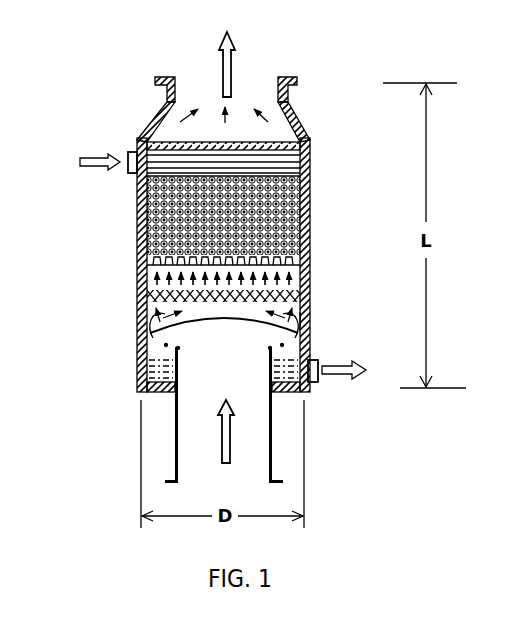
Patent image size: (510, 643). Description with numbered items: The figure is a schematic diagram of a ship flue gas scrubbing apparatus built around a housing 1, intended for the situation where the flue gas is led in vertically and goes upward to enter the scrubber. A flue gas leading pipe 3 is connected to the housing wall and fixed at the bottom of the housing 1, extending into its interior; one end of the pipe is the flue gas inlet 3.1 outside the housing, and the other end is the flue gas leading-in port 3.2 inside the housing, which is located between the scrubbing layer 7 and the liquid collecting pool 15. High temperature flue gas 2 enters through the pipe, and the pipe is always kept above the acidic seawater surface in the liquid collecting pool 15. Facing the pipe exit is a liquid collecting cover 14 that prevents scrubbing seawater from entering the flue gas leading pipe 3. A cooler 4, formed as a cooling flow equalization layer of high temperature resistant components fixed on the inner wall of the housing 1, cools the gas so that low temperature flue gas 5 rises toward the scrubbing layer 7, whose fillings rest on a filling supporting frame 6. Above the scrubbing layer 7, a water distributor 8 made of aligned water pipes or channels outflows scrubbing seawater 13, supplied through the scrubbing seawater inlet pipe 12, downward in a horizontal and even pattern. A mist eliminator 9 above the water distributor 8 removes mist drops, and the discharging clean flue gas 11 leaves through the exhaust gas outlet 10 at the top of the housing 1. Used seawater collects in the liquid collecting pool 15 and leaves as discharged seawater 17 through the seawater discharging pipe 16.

The housing 1 is at (193, 269).
The high temperature flue gas 2 is at (282, 431).
The flue gas leading pipe 3 is at (185, 415).
The flue gas inlet outside the housing 3.1 is at (261, 496).
The flue gas leading-in port inside the housing 3.2 is at (336, 305).
The cooler 4 is at (256, 271).
The low temperature flue gas 5 is at (186, 249).
The filling supporting frame 6 is at (256, 235).
The scrubbing layer 7 is at (257, 204).
The water distributor 8 is at (255, 143).
The mist eliminator 9 is at (204, 105).
The exhaust gas outlet 10 is at (251, 60).
The discharging clean flue gas 11 is at (196, 67).
The scrubbing seawater inlet pipe 12 is at (99, 135).
The scrubbing seawater 13 is at (76, 174).
The liquid collecting cover 14 is at (192, 306).
The liquid collecting pool 15 is at (185, 343).
The seawater discharging pipe 16 is at (346, 347).
The discharged seawater 17 is at (361, 389).